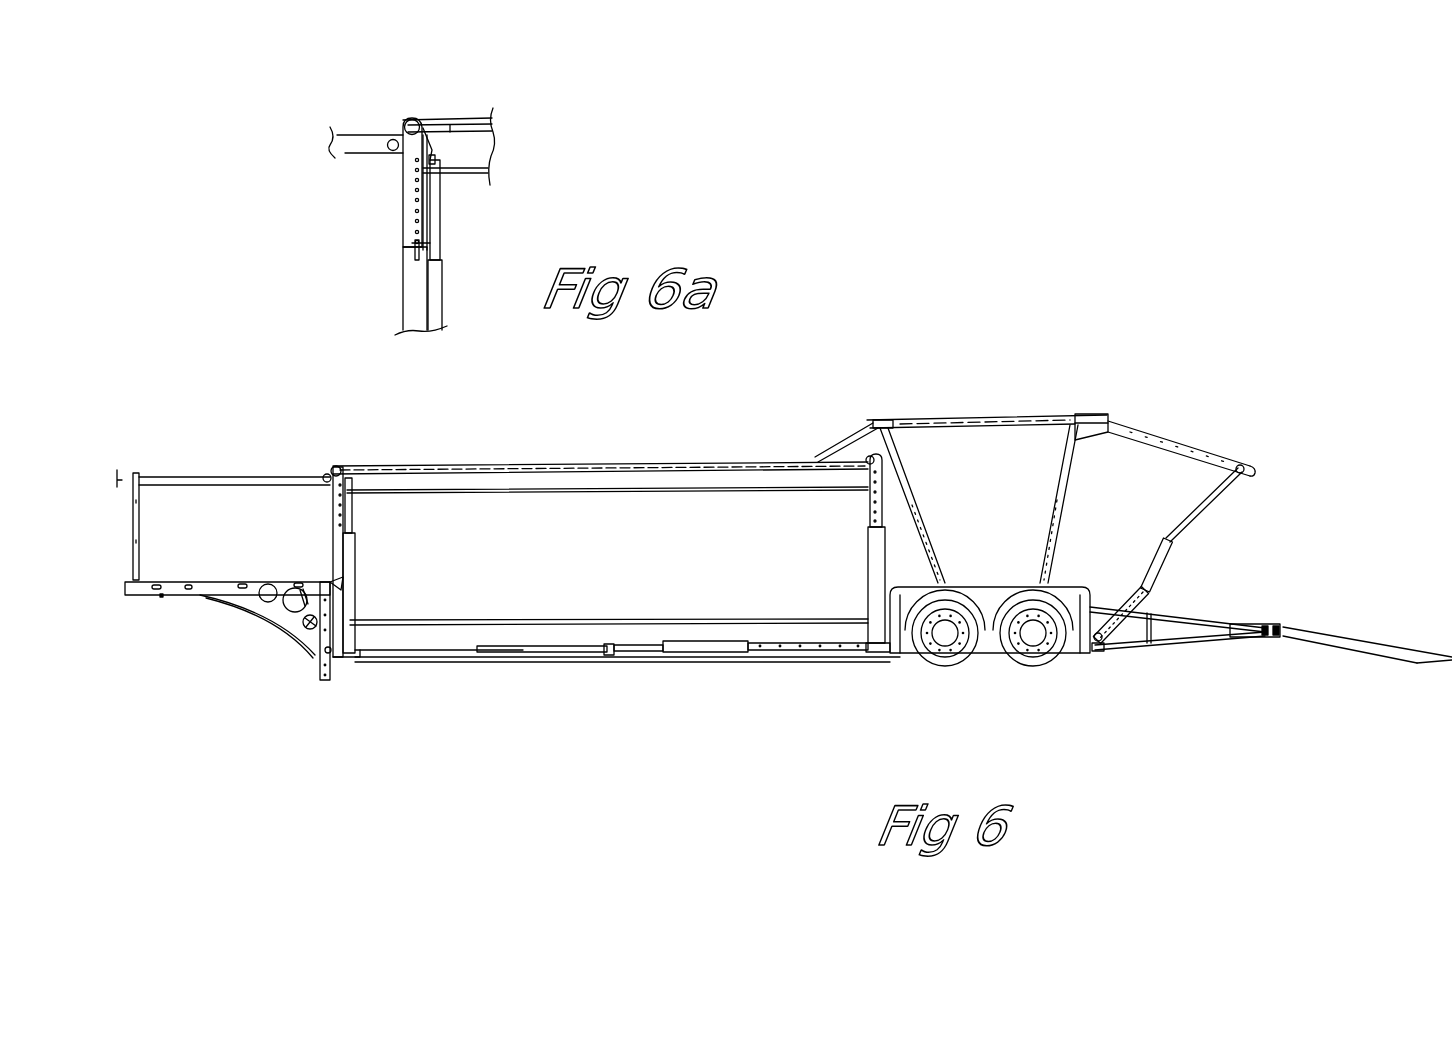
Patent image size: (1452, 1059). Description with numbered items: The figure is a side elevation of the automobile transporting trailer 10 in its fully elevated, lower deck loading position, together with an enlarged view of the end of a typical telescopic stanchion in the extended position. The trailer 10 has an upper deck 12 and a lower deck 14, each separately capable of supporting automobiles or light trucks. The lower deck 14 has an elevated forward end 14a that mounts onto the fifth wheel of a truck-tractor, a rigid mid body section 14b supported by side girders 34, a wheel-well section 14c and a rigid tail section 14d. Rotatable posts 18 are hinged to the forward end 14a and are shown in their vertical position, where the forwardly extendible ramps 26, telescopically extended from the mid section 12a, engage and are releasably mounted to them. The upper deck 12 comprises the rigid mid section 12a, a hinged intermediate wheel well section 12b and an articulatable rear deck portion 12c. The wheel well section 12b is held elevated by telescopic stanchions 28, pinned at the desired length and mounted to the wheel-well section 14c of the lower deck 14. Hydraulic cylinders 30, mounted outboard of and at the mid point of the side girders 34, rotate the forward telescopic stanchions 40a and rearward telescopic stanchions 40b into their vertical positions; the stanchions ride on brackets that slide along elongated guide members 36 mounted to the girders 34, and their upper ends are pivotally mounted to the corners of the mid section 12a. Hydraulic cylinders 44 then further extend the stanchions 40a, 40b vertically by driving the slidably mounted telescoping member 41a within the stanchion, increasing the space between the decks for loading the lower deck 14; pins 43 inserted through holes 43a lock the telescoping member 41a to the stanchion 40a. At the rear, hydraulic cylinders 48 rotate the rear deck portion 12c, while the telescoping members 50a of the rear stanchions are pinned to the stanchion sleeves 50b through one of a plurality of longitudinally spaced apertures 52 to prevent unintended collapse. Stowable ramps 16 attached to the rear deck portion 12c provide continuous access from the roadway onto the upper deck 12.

In FIG. 6, the automobile transporting trailer 10 is at (760, 400).
In FIG. 6A, the upper deck 12 is at (495, 116).
In FIG. 6, the upper deck 12 is at (562, 452).
In FIG. 6, the mid section 12a is at (408, 462).
In FIG. 6, the hinged intermediate wheel well section 12b is at (948, 418).
In FIG. 6, the articulatable rear deck portion 12c is at (1180, 446).
In FIG. 6, the lower deck 14 is at (558, 610).
In FIG. 6, the elevated forward end 14a is at (220, 590).
In FIG. 6, the rigid mid body section 14b is at (418, 634).
In FIG. 6, the wheel-well section 14c is at (988, 612).
In FIG. 6, the rigid tail section 14d is at (1185, 642).
In FIG. 6, the stowable ramps 16 is at (1312, 632).
In FIG. 6, the rotatable posts 18 is at (140, 525).
In FIG. 6A, the forwardly extendible ramps 26 is at (358, 137).
In FIG. 6, the forwardly extendible ramps 26 is at (175, 478).
In FIG. 6, the telescopic stanchions 28 is at (905, 490).
In FIG. 6, the hydraulic cylinders 30 is at (663, 650).
In FIG. 6, the side girders 34 is at (642, 627).
In FIG. 6, the elongated guide members 36 is at (770, 655).
In FIG. 6A, the forward telescopic stanchions 40a is at (413, 283).
In FIG. 6, the forward telescopic stanchions 40a is at (333, 553).
In FIG. 6, the rearward telescopic stanchions 40b is at (885, 555).
In FIG. 6A, the telescoping member 41a is at (408, 183).
In FIG. 6A, the pins 43 is at (421, 243).
In FIG. 6A, the holes 43a is at (407, 222).
In FIG. 6A, the hydraulic cylinders 44 is at (437, 278).
In FIG. 6, the hydraulic cylinders 44 is at (352, 560).
In FIG. 6, the hydraulic cylinders 48 is at (1163, 542).
In FIG. 6, the telescoping members 50a is at (1140, 598).
In FIG. 6, the stanchion sleeves 50b is at (1172, 554).
In FIG. 6, the longitudinally spaced apart apertures 52 is at (1098, 645).